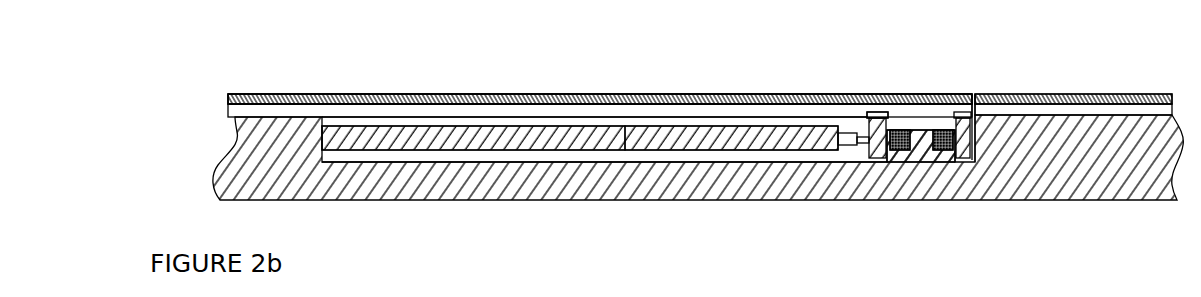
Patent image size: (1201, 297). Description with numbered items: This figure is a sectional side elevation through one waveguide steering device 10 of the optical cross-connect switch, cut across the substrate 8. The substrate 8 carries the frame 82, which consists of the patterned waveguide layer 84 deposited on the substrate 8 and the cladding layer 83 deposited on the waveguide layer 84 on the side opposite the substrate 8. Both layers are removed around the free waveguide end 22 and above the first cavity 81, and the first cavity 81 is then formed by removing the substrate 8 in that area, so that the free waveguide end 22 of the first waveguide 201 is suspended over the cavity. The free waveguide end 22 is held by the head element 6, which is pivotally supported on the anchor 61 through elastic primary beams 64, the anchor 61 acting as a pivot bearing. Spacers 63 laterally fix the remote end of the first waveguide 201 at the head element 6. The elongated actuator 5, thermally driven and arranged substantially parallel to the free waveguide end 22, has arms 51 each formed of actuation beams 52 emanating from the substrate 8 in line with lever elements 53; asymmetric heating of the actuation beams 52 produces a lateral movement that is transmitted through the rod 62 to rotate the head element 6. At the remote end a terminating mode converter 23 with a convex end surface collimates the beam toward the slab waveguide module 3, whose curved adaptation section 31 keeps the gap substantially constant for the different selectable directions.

The first waveguide 201 is at (344, 73).
The waveguide steering device 10 is at (863, 31).
The slab waveguide module 3 is at (1058, 108).
The adaptation section 31 is at (977, 126).
The actuator 5 is at (709, 108).
The arm 51 is at (660, 68).
The actuation beam 52 is at (520, 132).
The lever element 53 is at (677, 135).
The head element 6 is at (866, 92).
The anchor 61 is at (923, 147).
The rod 62 is at (867, 160).
The spacer 63 is at (877, 112).
The primary beam 64 is at (903, 152).
The substrate 8 is at (645, 173).
The first cavity 81 is at (440, 165).
The frame 82 is at (245, 93).
The cladding layer 83 is at (283, 97).
The waveguide layer 84 is at (238, 107).
The free waveguide end 22 is at (455, 108).
The terminating mode converter 23 is at (963, 107).